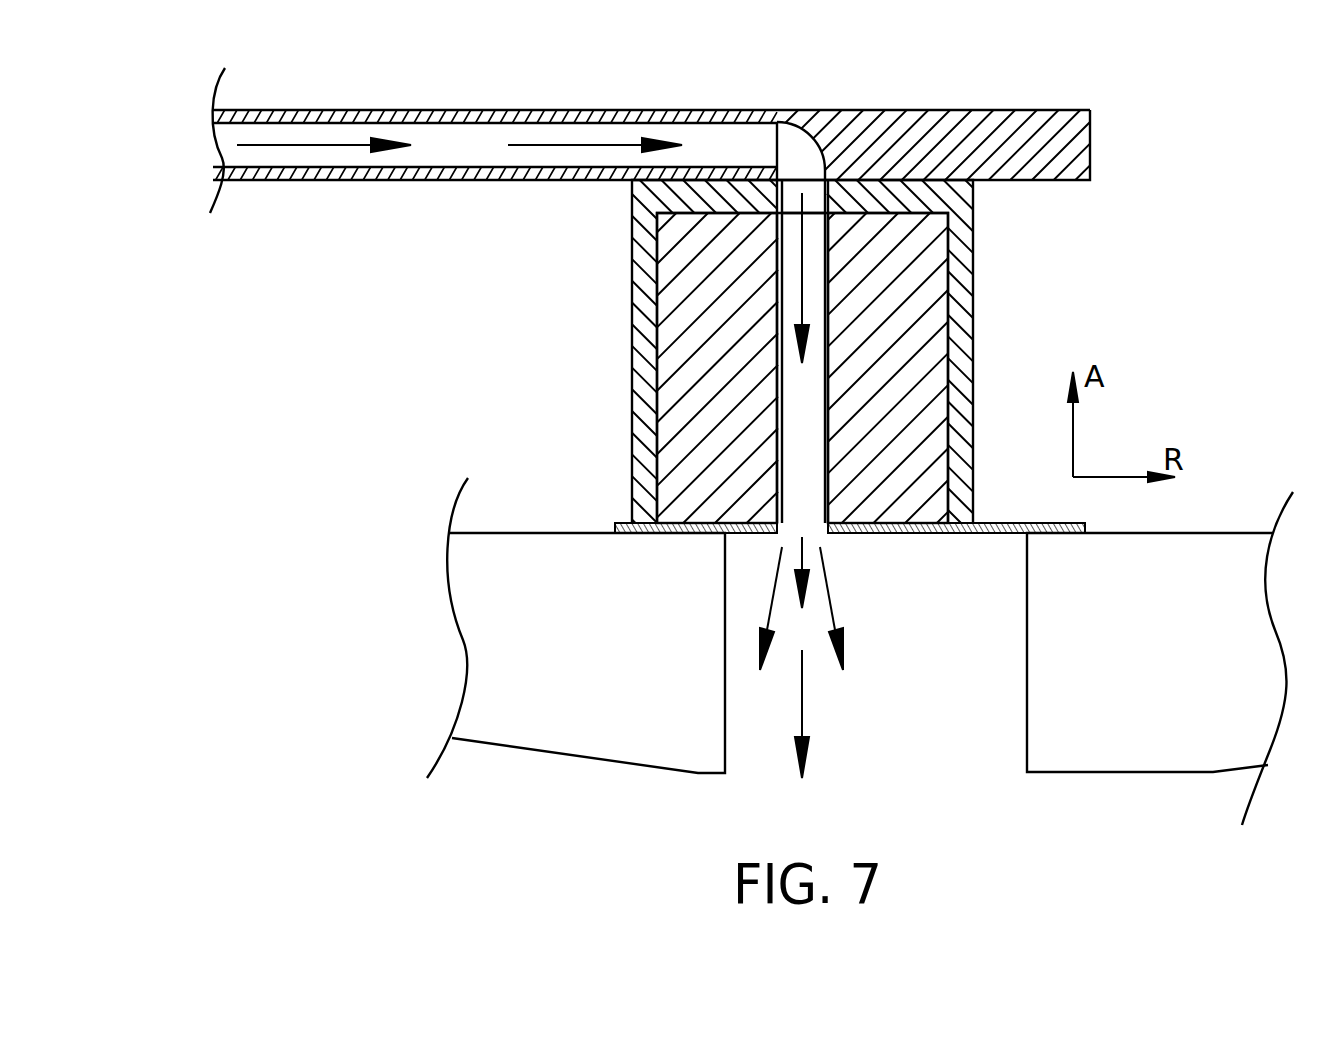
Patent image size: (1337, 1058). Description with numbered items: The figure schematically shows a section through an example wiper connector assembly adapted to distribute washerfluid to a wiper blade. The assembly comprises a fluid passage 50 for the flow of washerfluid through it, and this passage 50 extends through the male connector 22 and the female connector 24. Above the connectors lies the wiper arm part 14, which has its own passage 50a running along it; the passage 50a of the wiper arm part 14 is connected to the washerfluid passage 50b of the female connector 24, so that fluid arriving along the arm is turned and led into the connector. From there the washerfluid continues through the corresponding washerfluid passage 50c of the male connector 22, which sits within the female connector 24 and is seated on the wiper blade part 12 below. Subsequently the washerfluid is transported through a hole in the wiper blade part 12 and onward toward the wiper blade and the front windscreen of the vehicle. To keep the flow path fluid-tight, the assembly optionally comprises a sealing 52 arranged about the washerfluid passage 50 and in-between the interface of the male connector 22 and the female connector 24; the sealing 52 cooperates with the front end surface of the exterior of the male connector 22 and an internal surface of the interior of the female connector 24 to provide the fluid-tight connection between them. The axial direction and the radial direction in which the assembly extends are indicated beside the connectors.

The fluid passage 50 is at (650, 410).
The passage of the wiper arm part 50a is at (457, 148).
The washerfluid passage of the female connector 50b is at (730, 119).
The sealing 52 is at (817, 197).
The washerfluid passage of the male connector 50c is at (805, 409).
The wiper arm part 14 is at (940, 147).
The female connector 24 is at (958, 256).
The male connector 22 is at (885, 342).
The wiper blade part 12 is at (593, 660).